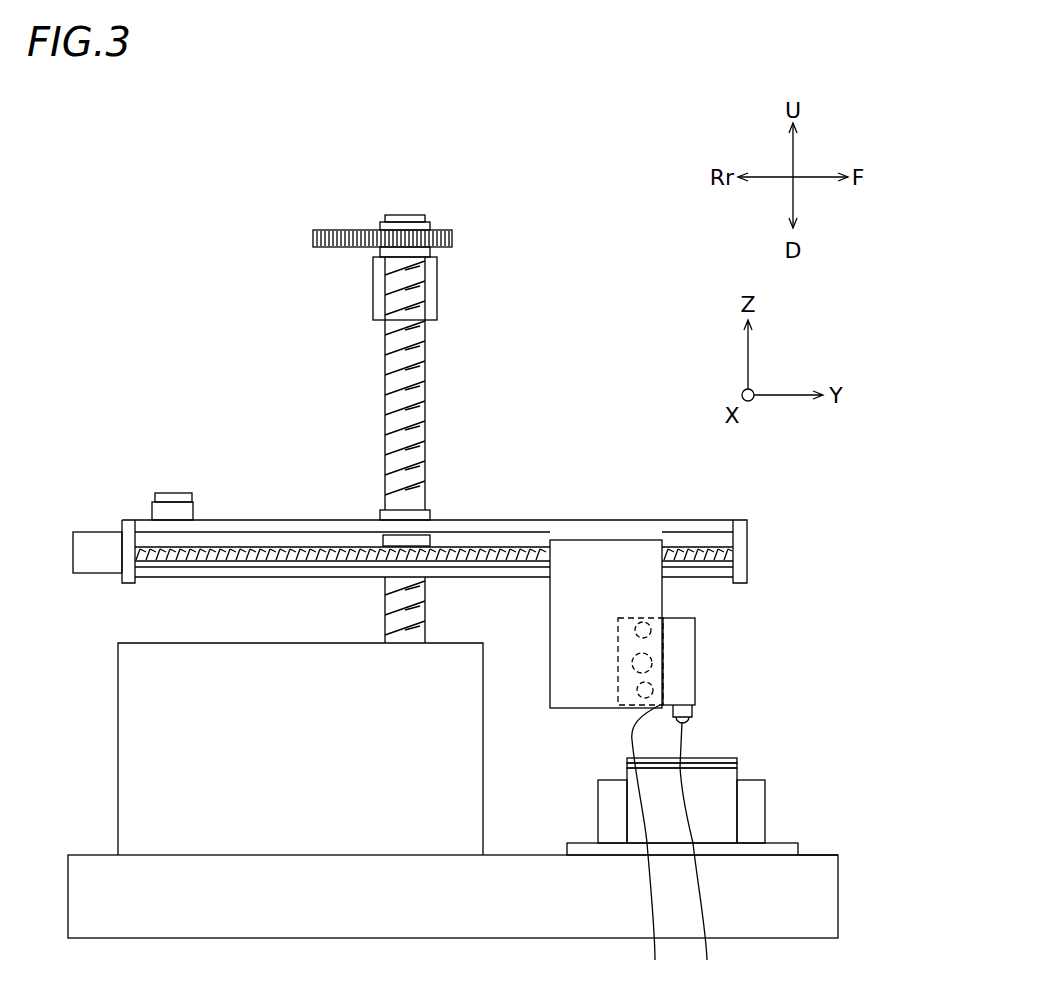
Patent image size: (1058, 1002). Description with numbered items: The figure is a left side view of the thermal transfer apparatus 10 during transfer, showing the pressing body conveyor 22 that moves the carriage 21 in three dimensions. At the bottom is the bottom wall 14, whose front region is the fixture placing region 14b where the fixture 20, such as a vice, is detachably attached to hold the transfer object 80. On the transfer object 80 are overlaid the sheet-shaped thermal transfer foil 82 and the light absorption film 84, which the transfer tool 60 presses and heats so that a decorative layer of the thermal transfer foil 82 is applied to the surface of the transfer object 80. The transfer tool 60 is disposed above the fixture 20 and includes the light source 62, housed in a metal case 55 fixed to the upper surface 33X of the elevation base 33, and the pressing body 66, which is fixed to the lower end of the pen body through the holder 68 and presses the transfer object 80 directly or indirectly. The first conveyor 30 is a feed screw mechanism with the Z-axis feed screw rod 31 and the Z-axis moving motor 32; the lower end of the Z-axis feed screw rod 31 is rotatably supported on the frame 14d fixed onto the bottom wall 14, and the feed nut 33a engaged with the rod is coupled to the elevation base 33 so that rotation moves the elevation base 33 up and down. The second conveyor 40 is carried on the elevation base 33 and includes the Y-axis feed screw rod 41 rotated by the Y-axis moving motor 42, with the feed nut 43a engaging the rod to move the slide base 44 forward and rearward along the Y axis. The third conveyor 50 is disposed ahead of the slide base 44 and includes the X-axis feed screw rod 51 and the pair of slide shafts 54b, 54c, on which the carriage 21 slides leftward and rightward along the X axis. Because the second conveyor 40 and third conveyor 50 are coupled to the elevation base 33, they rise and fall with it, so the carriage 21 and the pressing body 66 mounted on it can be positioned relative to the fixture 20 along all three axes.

The thermal transfer apparatus 10 is at (618, 280).
The bottom wall 14 is at (838, 902).
The fixture placing region 14b is at (822, 855).
The frame 14d is at (175, 643).
The fixture 20 is at (765, 838).
The carriage 21 is at (708, 655).
The pressing body conveyor 22 is at (502, 429).
The first conveyor 30 is at (461, 349).
The Z-axis feed screw rod 31 is at (385, 600).
The Z-axis moving motor 32 is at (373, 300).
The elevation base 33 is at (523, 510).
The upper surface of the elevation base 33X is at (330, 520).
The feed nut 33a is at (432, 505).
The second conveyor 40 is at (811, 528).
The Y-axis feed screw rod 41 is at (675, 532).
The Y-axis moving motor 42 is at (105, 573).
The screw shaft 43a is at (265, 577).
The slide base 44 is at (674, 592).
The third conveyor 50 is at (606, 646).
The X-axis feed screw rod 51 is at (618, 665).
The slide shaft 54b is at (581, 575).
The slide shaft 54c is at (625, 690).
The case 55 is at (193, 512).
The transfer tool 60 is at (708, 710).
The light source 62 is at (175, 493).
The pressing body 66 is at (702, 858).
The holder 68 is at (652, 850).
The transfer object 80 is at (730, 803).
The thermal transfer foil 82 is at (740, 766).
The light absorption film 84 is at (740, 760).